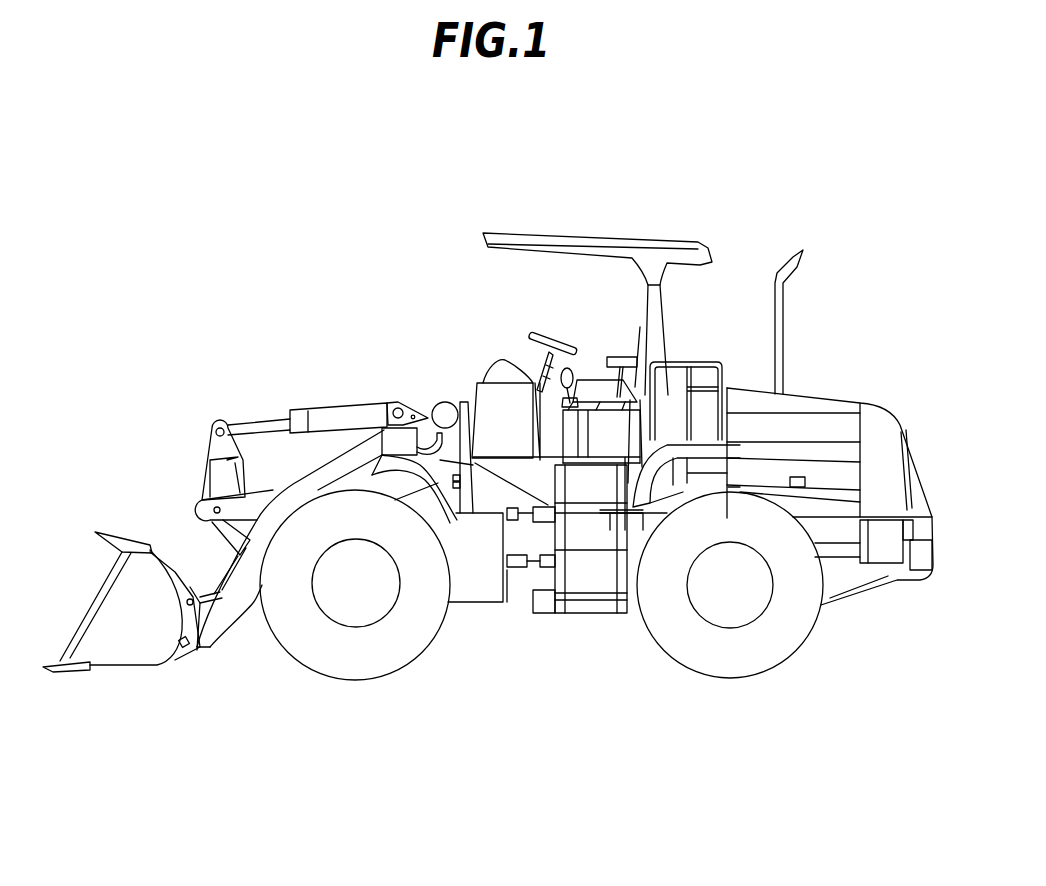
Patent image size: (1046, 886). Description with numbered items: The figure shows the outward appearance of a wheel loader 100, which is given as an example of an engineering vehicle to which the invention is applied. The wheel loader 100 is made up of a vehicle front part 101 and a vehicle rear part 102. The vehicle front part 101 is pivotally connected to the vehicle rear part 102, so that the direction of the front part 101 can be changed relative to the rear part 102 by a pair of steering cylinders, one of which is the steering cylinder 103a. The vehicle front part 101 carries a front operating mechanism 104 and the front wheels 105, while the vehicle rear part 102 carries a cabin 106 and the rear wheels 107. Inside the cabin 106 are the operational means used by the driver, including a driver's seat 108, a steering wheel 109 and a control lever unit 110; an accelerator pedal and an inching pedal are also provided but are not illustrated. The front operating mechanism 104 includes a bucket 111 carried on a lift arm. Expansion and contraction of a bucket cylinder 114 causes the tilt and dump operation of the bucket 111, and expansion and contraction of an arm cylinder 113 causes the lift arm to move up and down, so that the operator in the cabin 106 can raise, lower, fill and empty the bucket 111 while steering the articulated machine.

The wheel loader 100 is at (775, 193).
The vehicle front part 101 is at (341, 359).
The vehicle rear part 102 is at (888, 385).
The steering cylinder 103a is at (512, 603).
The front operating mechanism 104 is at (219, 643).
The front wheels 105 is at (360, 656).
The cabin 106 is at (573, 337).
The rear wheels 107 is at (730, 662).
The driver's seat 108 is at (593, 377).
The steering wheel 109 is at (533, 338).
The control lever unit 110 is at (498, 368).
The bucket 111 is at (117, 547).
The arm cylinder 113 is at (417, 503).
The bucket cylinder 114 is at (303, 407).